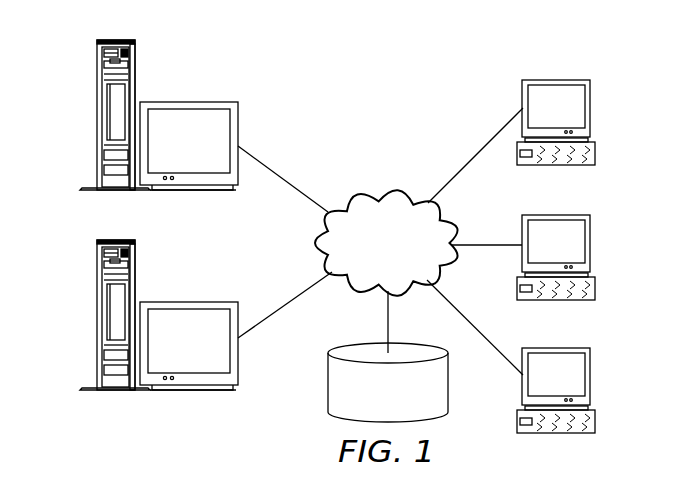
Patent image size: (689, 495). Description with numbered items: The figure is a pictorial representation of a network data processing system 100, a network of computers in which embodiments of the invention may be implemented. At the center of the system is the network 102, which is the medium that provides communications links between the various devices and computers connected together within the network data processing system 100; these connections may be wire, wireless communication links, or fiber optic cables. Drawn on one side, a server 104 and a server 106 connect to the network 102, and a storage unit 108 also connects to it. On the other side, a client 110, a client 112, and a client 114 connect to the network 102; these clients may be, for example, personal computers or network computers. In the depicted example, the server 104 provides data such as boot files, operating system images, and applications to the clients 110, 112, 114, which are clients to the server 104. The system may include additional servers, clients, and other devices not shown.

The network data processing system 100 is at (438, 85).
The network 102 is at (360, 198).
The server 104 is at (97, 128).
The server 106 is at (97, 316).
The storage unit 108 is at (328, 392).
The client 110 is at (590, 108).
The client 112 is at (590, 241).
The client 114 is at (590, 375).